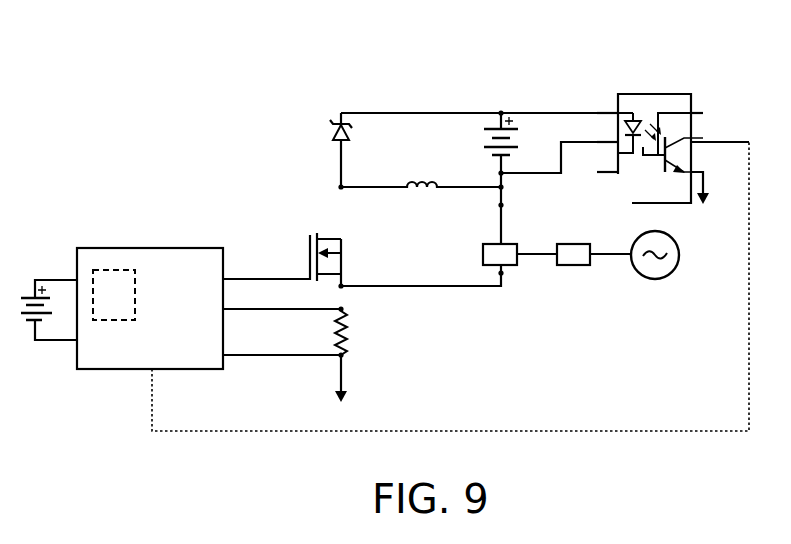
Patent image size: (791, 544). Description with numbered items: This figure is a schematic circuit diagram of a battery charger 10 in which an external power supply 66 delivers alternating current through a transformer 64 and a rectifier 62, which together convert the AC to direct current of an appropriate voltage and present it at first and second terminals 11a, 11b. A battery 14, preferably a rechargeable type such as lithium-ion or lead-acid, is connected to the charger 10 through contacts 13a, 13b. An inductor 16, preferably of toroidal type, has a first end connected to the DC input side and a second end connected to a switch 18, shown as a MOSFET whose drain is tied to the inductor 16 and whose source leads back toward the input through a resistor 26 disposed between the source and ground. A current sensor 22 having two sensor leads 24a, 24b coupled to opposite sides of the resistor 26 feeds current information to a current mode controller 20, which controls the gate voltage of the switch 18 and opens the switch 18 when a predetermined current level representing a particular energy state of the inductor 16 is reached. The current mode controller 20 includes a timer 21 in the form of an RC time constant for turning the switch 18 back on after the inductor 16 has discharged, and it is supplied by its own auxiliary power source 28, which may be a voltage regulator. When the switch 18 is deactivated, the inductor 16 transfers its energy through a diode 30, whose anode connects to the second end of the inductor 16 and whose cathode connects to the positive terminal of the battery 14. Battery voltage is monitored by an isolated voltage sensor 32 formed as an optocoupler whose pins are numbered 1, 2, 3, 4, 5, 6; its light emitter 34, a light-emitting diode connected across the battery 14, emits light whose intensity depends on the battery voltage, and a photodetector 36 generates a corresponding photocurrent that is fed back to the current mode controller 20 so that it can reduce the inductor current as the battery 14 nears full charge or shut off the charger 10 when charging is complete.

The charger 10 is at (430, 86).
The first terminal 11a is at (503, 206).
The second terminal 11b is at (504, 275).
The contact 13a is at (502, 110).
The contact 13b is at (503, 189).
The battery 14 is at (489, 138).
The inductor 16 is at (422, 190).
The switch 18 is at (308, 238).
The current mode controller 20 is at (138, 247).
The timer 21 is at (98, 268).
The current sensor 22 is at (369, 342).
The sensor lead 24a is at (263, 307).
The sensor lead 24b is at (297, 357).
The resistor 26 is at (348, 322).
The auxiliary power source 28 is at (25, 292).
The diode 30 is at (330, 138).
The isolated voltage sensor 32 is at (672, 93).
The light emitter 34 is at (637, 118).
The photodetector 36 is at (660, 170).
The rectifier 62 is at (482, 250).
The transformer 64 is at (584, 268).
The external power supply 66 is at (675, 273).
The optocoupler pin 1 is at (607, 101).
The optocoupler pin 2 is at (607, 132).
The optocoupler pin 3 is at (607, 162).
The optocoupler pin 4 is at (702, 177).
The optocoupler pin 5 is at (720, 131).
The optocoupler pin 6 is at (702, 101).